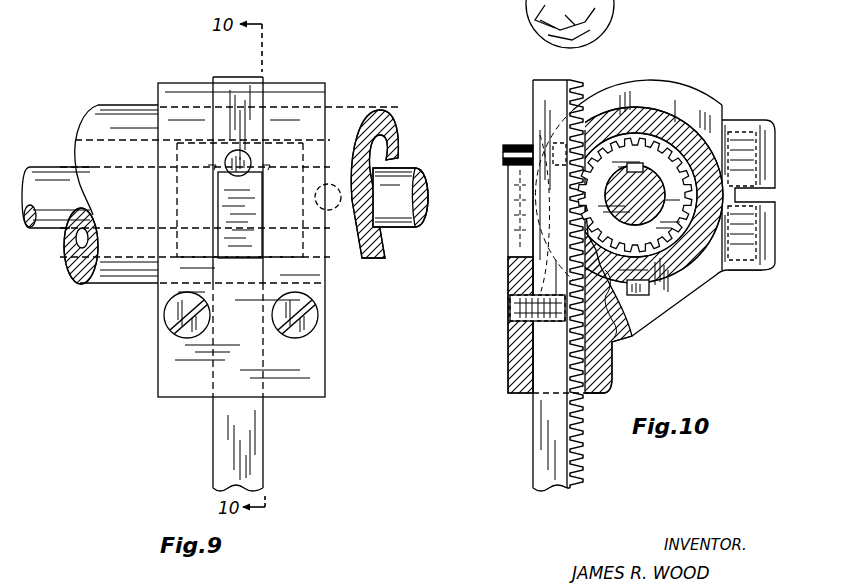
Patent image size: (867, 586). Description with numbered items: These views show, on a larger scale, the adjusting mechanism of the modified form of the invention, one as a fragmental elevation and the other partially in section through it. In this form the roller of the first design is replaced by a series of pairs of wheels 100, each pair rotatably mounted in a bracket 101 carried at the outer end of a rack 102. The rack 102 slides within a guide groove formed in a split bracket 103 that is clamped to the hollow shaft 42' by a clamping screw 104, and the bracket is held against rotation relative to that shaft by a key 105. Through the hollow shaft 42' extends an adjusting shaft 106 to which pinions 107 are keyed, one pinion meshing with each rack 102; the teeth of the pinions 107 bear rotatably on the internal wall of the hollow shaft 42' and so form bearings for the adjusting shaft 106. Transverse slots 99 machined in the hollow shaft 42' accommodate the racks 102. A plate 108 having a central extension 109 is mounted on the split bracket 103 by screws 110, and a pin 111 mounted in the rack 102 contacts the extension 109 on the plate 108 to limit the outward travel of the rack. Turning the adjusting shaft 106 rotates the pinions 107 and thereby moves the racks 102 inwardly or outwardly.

In FIG. 9, the hollow shaft 42' is at (391, 173).
In FIG. 10, the hollow shaft 42' is at (732, 104).
In FIG. 10, the transverse slots 99 is at (600, 106).
In FIG. 10, the wheels 100 is at (606, 14).
In FIG. 10, the bracket 101 is at (536, 22).
In FIG. 9, the rack 102 is at (255, 80).
In FIG. 10, the rack 102 is at (535, 456).
In FIG. 10, the split bracket 103 is at (683, 320).
In FIG. 10, the clamping screw 104 is at (733, 272).
In FIG. 10, the key 105 is at (640, 298).
In FIG. 9, the adjusting shaft 106 is at (412, 166).
In FIG. 10, the adjusting shaft 106 is at (672, 112).
In FIG. 9, the pinion 107 is at (138, 284).
In FIG. 10, the pinion 107 is at (700, 262).
In FIG. 9, the plate 108 is at (322, 363).
In FIG. 10, the plate 108 is at (515, 370).
In FIG. 9, the central extension 109 is at (258, 212).
In FIG. 9, the screws 110 is at (166, 318).
In FIG. 10, the screws 110 is at (509, 311).
In FIG. 9, the pin 111 is at (246, 154).
In FIG. 10, the pin 111 is at (518, 145).